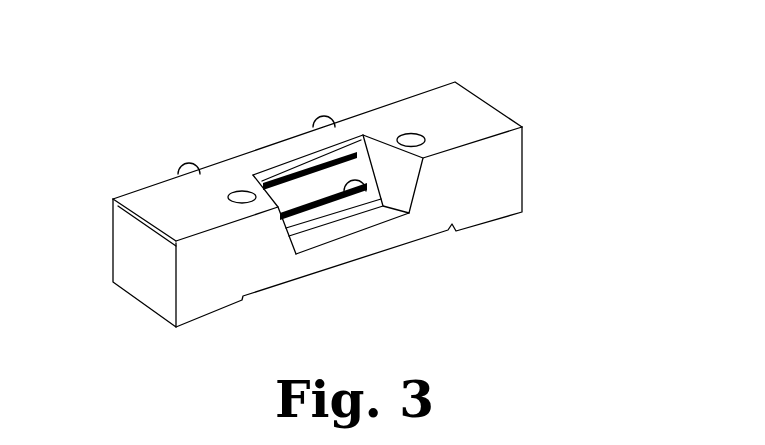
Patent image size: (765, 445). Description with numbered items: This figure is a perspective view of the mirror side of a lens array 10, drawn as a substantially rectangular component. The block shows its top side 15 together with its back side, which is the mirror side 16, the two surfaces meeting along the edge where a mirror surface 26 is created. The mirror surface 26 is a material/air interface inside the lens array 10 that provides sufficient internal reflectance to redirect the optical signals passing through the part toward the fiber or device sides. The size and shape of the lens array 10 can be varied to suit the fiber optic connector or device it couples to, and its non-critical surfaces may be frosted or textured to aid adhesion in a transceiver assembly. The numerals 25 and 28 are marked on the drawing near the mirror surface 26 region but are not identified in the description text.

The lens array 10 is at (462, 53).
The top side 15 is at (180, 198).
The mirror side 16 is at (485, 203).
The upper contact strip 25 is at (329, 150).
The mirror surface 26 is at (310, 193).
The lower contact strip 28 is at (371, 188).